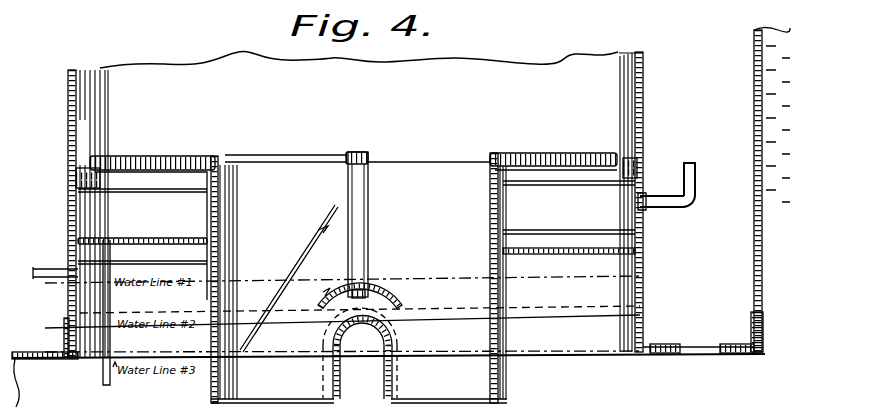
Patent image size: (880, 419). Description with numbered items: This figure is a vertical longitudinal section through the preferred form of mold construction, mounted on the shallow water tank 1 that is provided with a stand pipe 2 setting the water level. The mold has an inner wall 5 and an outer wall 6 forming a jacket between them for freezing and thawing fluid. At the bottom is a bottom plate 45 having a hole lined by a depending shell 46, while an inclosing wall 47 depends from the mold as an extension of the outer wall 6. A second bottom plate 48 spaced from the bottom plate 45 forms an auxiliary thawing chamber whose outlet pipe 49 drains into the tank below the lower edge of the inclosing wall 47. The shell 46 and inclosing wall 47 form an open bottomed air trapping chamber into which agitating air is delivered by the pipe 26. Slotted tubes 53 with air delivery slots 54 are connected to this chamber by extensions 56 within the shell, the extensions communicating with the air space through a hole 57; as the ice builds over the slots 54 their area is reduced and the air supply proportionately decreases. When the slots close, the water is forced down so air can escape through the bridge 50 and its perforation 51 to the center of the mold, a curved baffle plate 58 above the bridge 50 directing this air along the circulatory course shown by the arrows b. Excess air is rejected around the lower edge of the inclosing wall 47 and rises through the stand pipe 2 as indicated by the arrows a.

The shallow water tank 1 is at (700, 352).
The stand pipe 2 is at (754, 205).
The inner wall 5 is at (95, 137).
The outer wall 6 is at (75, 124).
The pipe 26 is at (45, 265).
The bottom plate 45 is at (598, 166).
The shell 46 is at (503, 229).
The inclosing wall 47 is at (643, 278).
The second bottom plate 48 is at (620, 201).
The outlet pipe 49 is at (112, 300).
The bridge 50 is at (392, 345).
The perforation 51 is at (372, 305).
The tube 53 is at (180, 157).
The air delivery slot 54 is at (225, 148).
The extension 56 is at (230, 248).
The hole 57 is at (210, 281).
The baffle plate 58 is at (318, 299).
The arrows a is at (645, 358).
The arrows b is at (300, 272).